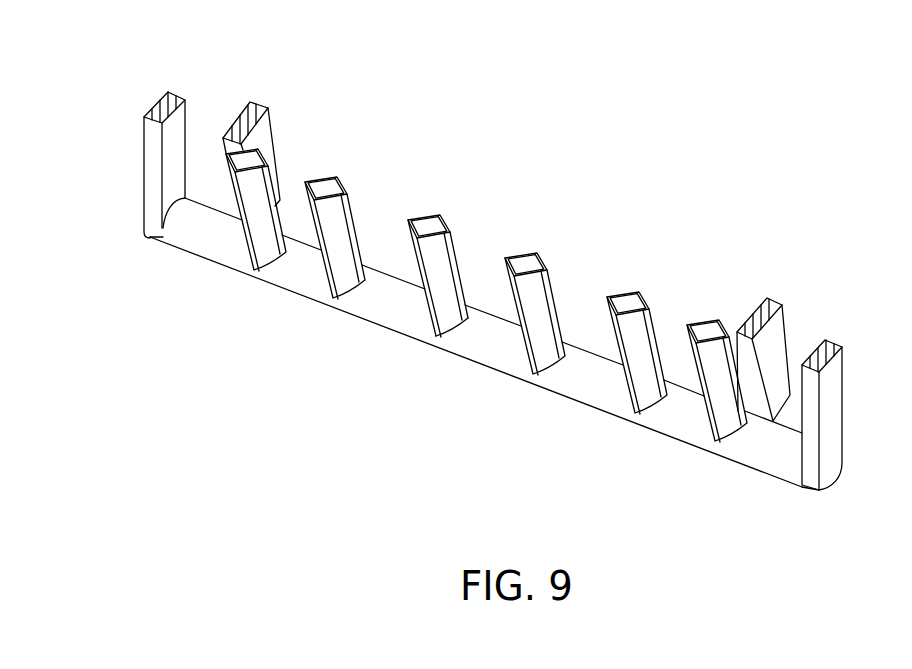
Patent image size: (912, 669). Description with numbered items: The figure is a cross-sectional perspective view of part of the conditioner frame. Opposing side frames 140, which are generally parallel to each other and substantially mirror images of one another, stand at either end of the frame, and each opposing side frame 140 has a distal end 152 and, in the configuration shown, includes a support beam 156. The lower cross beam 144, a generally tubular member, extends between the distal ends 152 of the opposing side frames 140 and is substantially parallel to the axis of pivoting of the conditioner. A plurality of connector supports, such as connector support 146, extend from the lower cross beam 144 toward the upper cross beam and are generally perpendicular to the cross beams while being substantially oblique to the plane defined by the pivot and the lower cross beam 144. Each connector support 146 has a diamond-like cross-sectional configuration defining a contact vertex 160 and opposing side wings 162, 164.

The opposing side frame 140 is at (143, 174).
The lower cross beam 144 is at (300, 297).
The connector support 146 is at (486, 294).
The distal end 152 is at (147, 243).
The support beam 156 is at (272, 135).
The contact vertex 160 is at (423, 299).
The opposing side wing 162 is at (411, 264).
The opposing side wing 164 is at (450, 313).